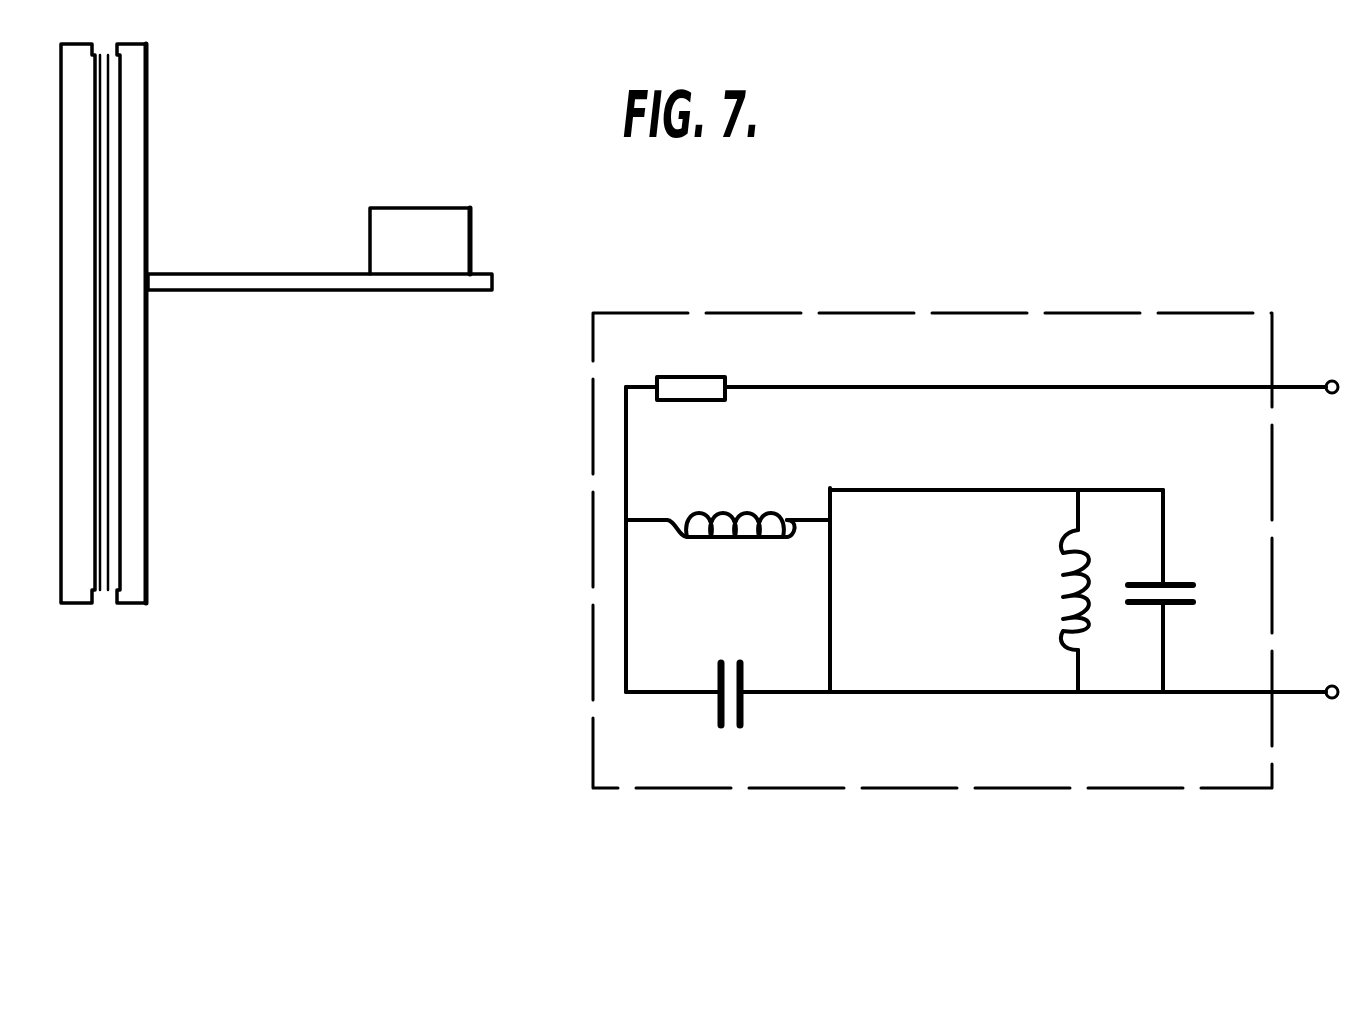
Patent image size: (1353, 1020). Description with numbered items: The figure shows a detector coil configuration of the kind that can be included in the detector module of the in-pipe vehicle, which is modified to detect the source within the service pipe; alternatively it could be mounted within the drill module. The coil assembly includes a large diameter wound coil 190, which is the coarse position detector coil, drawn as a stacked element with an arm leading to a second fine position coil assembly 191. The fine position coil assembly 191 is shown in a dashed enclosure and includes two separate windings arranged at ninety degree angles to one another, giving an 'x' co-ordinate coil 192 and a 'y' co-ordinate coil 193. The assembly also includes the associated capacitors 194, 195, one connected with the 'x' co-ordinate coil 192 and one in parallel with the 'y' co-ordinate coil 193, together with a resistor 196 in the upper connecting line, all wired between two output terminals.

The large diameter wound coil 190 is at (108, 457).
The second fine position coil assembly 191 is at (613, 312).
The 'x' co-ordinate coil 192 is at (710, 537).
The 'y' co-ordinate coil 193 is at (1062, 615).
The capacitor 194 is at (745, 723).
The capacitor 195 is at (1177, 580).
The resistor 196 is at (708, 388).